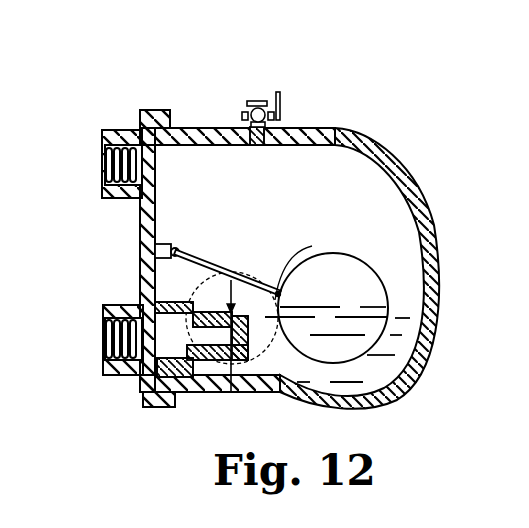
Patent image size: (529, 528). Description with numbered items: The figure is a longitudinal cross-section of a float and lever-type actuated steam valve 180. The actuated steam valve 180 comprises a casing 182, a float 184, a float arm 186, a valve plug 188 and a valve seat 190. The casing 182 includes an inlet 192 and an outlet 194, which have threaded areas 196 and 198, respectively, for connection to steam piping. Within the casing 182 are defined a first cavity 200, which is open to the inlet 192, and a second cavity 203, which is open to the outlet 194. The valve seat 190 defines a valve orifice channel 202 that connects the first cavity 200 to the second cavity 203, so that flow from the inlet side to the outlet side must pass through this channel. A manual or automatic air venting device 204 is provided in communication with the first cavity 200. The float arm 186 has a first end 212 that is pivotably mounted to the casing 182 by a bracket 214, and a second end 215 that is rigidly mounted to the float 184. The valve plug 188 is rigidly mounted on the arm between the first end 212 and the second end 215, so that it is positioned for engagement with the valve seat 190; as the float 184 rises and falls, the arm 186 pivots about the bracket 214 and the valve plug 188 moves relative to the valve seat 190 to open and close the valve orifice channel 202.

The actuated steam valve 180 is at (395, 123).
The casing 182 is at (425, 242).
The float 184 is at (370, 262).
The float arm 186 is at (223, 273).
The valve plug 188 is at (280, 294).
The valve seat 190 is at (227, 303).
The inlet 192 is at (102, 162).
The outlet 194 is at (103, 337).
The threaded area 196 is at (117, 167).
The threaded area 198 is at (117, 347).
The first cavity 200 is at (323, 167).
The valve orifice channel 202 is at (231, 392).
The second cavity 203 is at (172, 346).
The air venting device 204 is at (258, 101).
The first end 212 is at (187, 243).
The bracket 214 is at (160, 247).
The second end 215 is at (309, 258).